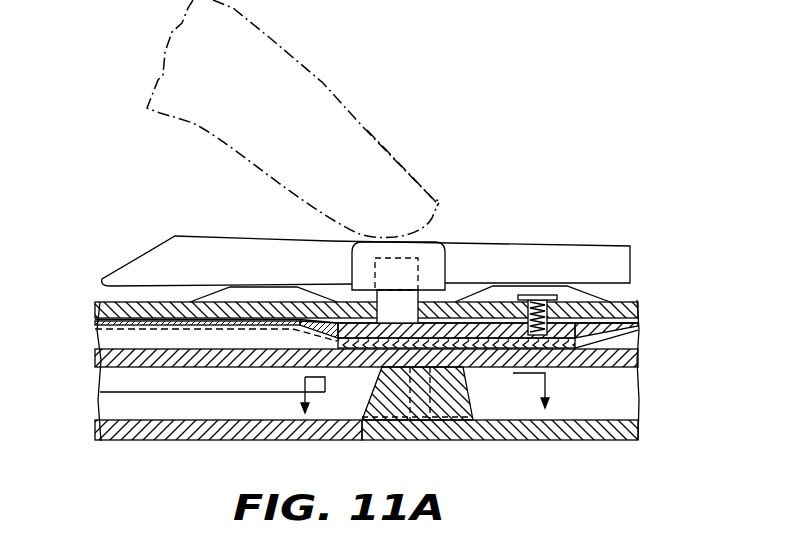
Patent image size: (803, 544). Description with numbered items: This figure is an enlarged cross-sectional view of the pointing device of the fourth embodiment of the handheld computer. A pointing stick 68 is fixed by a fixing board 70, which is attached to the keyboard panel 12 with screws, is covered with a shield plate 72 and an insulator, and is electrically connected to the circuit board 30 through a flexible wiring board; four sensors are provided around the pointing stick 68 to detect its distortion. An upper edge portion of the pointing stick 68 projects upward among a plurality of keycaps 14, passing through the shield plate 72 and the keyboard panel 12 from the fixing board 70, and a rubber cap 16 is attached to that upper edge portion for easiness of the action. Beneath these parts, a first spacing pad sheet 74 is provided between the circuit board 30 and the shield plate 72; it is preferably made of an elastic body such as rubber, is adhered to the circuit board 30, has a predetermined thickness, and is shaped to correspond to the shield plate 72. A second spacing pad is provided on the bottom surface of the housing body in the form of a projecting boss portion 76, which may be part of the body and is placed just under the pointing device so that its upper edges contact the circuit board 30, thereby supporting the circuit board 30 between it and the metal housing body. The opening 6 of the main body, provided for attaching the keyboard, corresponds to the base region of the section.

The opening 6 is at (217, 437).
The keyboard panel 12 is at (637, 303).
The keycaps 14 is at (610, 250).
The rubber cap 16 is at (425, 248).
The circuit board 30 is at (117, 365).
The pointing stick 68 is at (393, 302).
The fixing board 70 is at (483, 313).
The shield plate 72 is at (640, 337).
The first spacing pad sheet 74 is at (502, 363).
The boss portion 76 is at (448, 417).